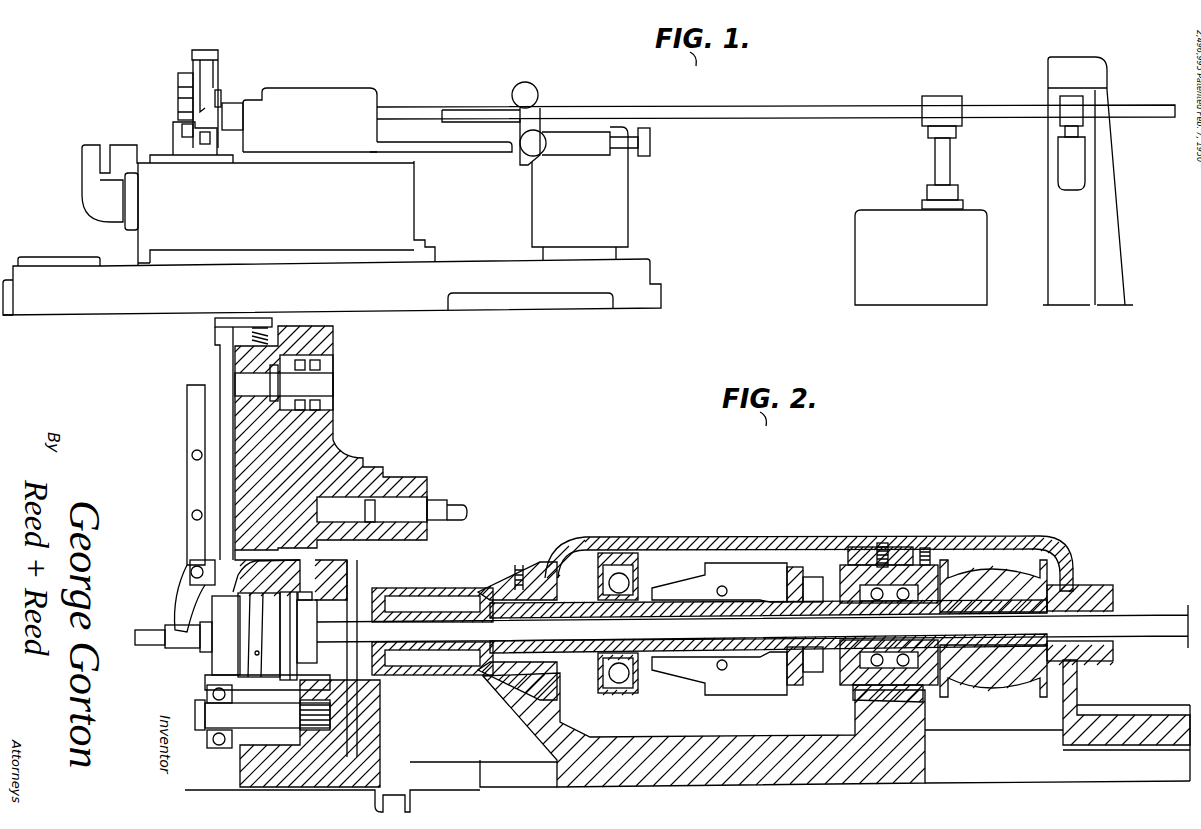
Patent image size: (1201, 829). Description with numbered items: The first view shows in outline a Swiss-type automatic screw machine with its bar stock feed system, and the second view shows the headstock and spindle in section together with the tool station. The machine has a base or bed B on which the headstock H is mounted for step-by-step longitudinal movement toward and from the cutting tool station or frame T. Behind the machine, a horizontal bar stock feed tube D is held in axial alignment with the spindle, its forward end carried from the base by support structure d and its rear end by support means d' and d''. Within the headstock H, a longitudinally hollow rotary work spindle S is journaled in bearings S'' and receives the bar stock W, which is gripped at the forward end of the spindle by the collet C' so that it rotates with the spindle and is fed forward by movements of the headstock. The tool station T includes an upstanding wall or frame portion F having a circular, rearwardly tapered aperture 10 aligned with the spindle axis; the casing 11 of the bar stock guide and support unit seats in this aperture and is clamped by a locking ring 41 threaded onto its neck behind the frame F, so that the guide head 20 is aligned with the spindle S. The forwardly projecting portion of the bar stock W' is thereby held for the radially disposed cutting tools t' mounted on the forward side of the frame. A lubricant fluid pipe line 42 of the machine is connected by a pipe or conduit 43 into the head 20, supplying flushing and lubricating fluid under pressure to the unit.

In FIG. 1, the base or bed B is at (311, 218).
In FIG. 2, the base or bed B is at (697, 806).
In FIG. 1, the headstock H is at (340, 133).
In FIG. 2, the headstock H is at (829, 538).
In FIG. 1, the cutting tool station or frame T is at (208, 104).
In FIG. 2, the cutting tool station or frame T is at (338, 470).
In FIG. 1, the cutting tools t' is at (170, 96).
In FIG. 2, the cutting tools t' is at (173, 598).
In FIG. 1, the bar stock feed tube D is at (772, 116).
In FIG. 1, the support structure d is at (572, 171).
In FIG. 1, the support means d' is at (929, 200).
In FIG. 1, the support means d'' is at (1094, 181).
In FIG. 2, the lubricant fluid pipe line 42 is at (450, 508).
In FIG. 2, the circular aperture or opening 10 is at (190, 572).
In FIG. 2, the forwardly projecting portion of the bar stock W' is at (173, 646).
In FIG. 2, the casing 11 is at (222, 662).
In FIG. 2, the guide head 20 is at (268, 658).
In FIG. 2, the locking ring 41 is at (286, 638).
In FIG. 2, the pipe or conduit 43 is at (306, 598).
In FIG. 2, the bar stock W is at (742, 621).
In FIG. 2, the wall or frame portion F is at (280, 572).
In FIG. 2, the collet C' is at (464, 631).
In FIG. 2, the rotary work spindle S is at (768, 598).
In FIG. 2, the bearings S'' is at (893, 642).